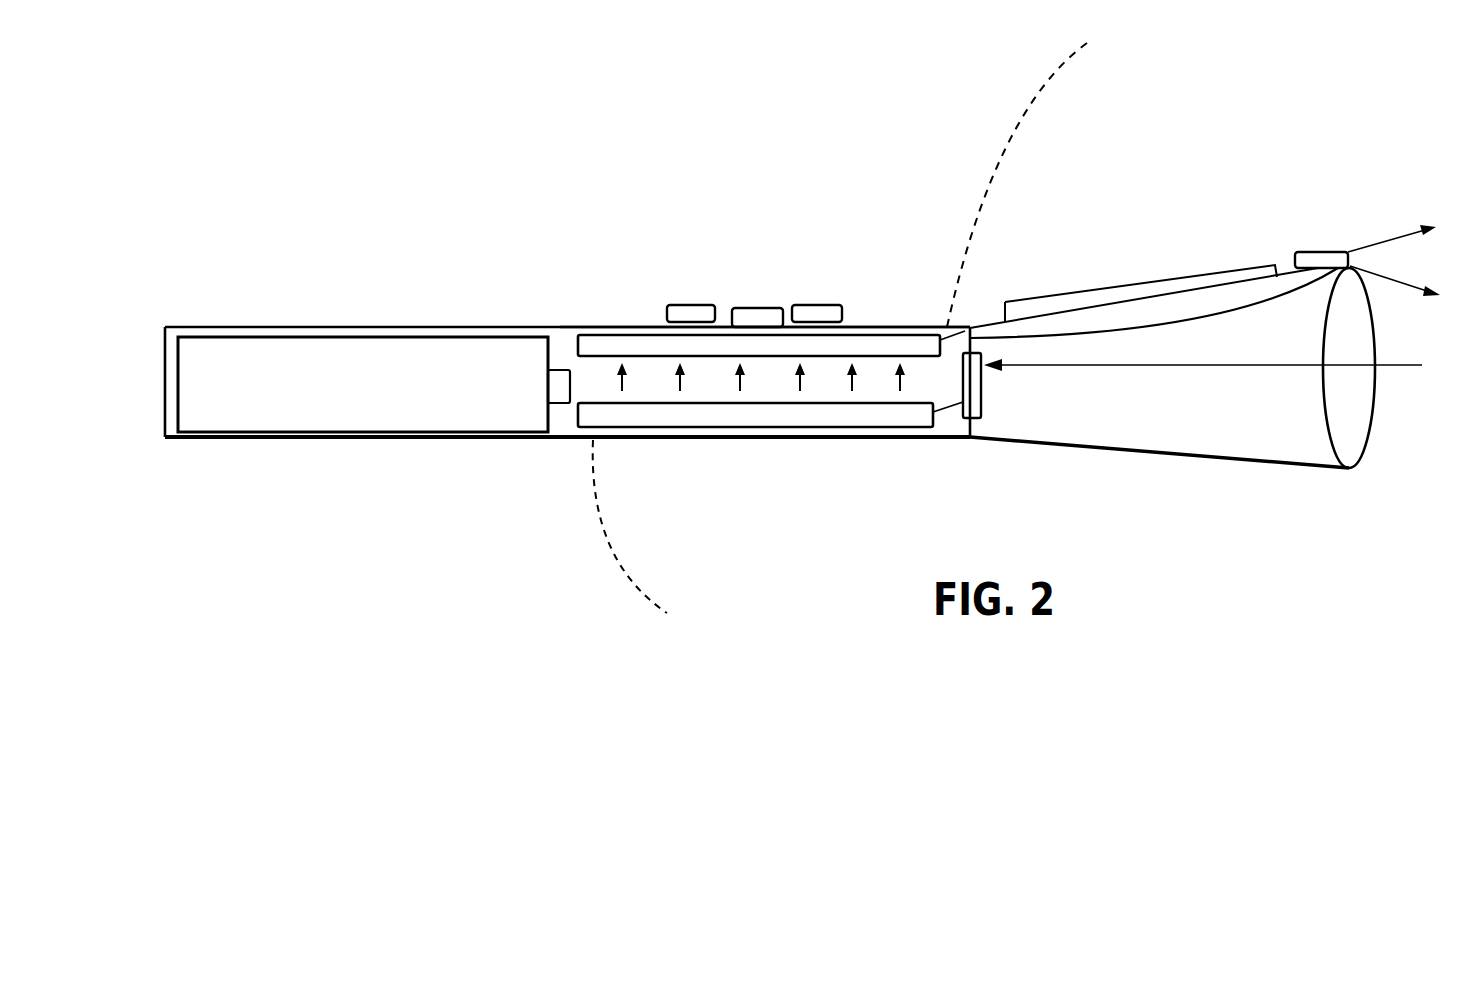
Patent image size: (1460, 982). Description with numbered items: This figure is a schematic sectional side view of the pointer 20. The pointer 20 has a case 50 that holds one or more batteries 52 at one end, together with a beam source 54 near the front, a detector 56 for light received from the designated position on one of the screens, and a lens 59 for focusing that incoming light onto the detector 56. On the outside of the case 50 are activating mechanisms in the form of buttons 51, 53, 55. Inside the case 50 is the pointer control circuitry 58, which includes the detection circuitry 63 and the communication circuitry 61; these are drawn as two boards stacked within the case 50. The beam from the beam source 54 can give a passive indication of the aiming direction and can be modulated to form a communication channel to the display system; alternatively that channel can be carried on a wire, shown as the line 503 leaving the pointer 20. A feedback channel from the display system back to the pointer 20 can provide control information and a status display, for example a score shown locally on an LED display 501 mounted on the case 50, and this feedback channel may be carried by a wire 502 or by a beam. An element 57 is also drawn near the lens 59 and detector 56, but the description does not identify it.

The pointer 20 is at (461, 290).
The case 50 is at (878, 327).
The activating mechanism (button) 51 is at (687, 305).
The batteries 52 is at (364, 407).
The activating mechanism (button) 53 is at (751, 308).
The beam source 54 is at (1310, 253).
The activating mechanism (button) 55 is at (818, 305).
The detector 56 is at (981, 401).
The optical axis 57 is at (1092, 372).
The pointer control circuitry 58 is at (832, 452).
The lens 59 is at (1371, 430).
The communication circuitry 61 is at (593, 343).
The detection circuitry 63 is at (667, 415).
The LED display 501 is at (1141, 284).
The wire 502 is at (606, 532).
The line 503 is at (994, 196).